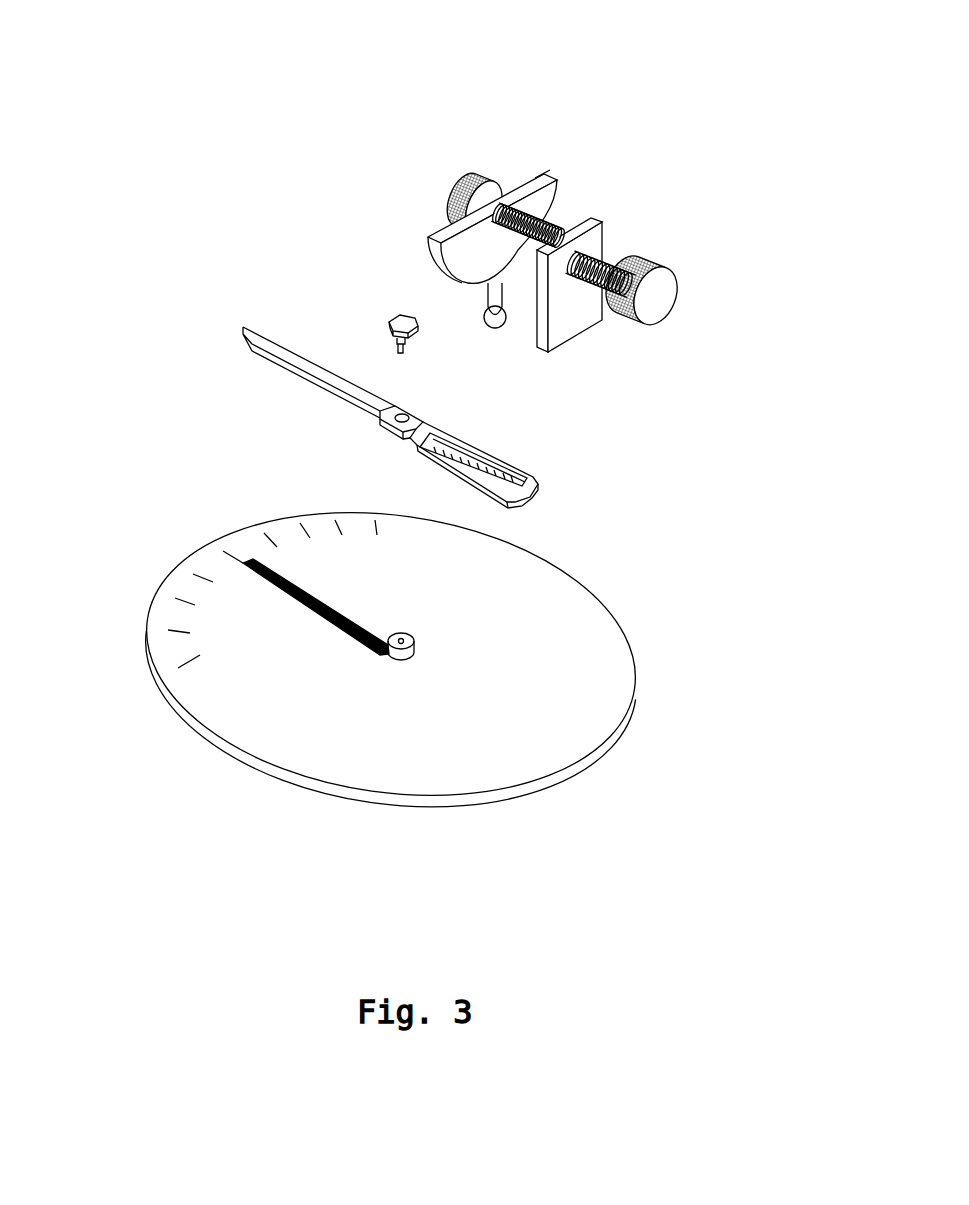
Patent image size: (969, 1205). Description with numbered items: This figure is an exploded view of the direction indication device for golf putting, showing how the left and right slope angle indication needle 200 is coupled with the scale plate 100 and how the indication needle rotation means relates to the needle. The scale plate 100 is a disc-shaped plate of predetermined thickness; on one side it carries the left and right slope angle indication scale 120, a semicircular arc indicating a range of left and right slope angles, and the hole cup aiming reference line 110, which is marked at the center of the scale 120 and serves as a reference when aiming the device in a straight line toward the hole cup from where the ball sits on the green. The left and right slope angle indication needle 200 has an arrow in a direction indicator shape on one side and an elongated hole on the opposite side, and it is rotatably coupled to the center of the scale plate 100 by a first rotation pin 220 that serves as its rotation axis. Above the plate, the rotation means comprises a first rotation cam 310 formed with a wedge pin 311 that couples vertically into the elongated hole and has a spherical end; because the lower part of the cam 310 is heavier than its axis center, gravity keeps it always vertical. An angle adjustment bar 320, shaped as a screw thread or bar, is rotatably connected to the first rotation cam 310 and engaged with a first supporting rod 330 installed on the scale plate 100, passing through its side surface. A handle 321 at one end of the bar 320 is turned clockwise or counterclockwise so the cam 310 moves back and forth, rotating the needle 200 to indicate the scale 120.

The scale plate 100 is at (340, 737).
The hole cup aiming reference line 110 is at (320, 613).
The left and right slope angle indication scale 120 is at (197, 575).
The left and right slope angle indication needle 200 is at (280, 343).
The first rotation pin 220 is at (398, 313).
The first rotation cam 310 is at (540, 177).
The wedge pin 311 is at (494, 328).
The angle adjustment bar 320 is at (618, 264).
The handle 321 is at (662, 287).
The first supporting rod 330 is at (597, 222).